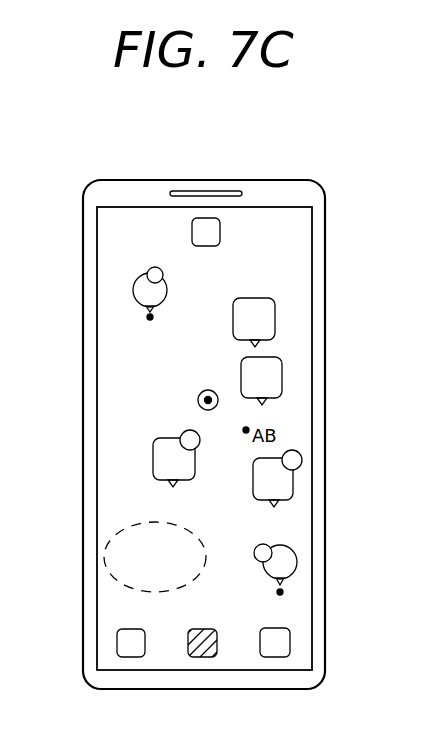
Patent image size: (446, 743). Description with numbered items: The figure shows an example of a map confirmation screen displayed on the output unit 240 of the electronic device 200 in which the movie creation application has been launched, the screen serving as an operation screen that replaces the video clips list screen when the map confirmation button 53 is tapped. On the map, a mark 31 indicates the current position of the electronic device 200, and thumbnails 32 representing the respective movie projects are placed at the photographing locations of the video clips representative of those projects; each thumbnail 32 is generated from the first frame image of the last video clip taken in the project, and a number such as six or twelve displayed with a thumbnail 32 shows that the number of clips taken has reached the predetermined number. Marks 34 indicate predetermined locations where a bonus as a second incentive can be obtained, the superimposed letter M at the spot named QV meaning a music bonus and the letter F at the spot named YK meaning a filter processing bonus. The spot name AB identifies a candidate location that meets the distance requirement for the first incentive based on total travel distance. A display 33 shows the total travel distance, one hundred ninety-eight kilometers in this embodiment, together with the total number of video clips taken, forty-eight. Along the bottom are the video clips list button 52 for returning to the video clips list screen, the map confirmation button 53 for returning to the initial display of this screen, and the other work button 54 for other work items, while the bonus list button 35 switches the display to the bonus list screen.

The electronic device 200 is at (280, 188).
The output unit 240 is at (307, 242).
The bonus list button 35 is at (205, 233).
The thumbnails 32 is at (268, 318).
The marks 34 is at (145, 290).
The mark 31 is at (198, 400).
The display 33 is at (103, 555).
The video clips list button 52 is at (132, 643).
The map confirmation button 53 is at (190, 633).
The other work button 54 is at (290, 643).